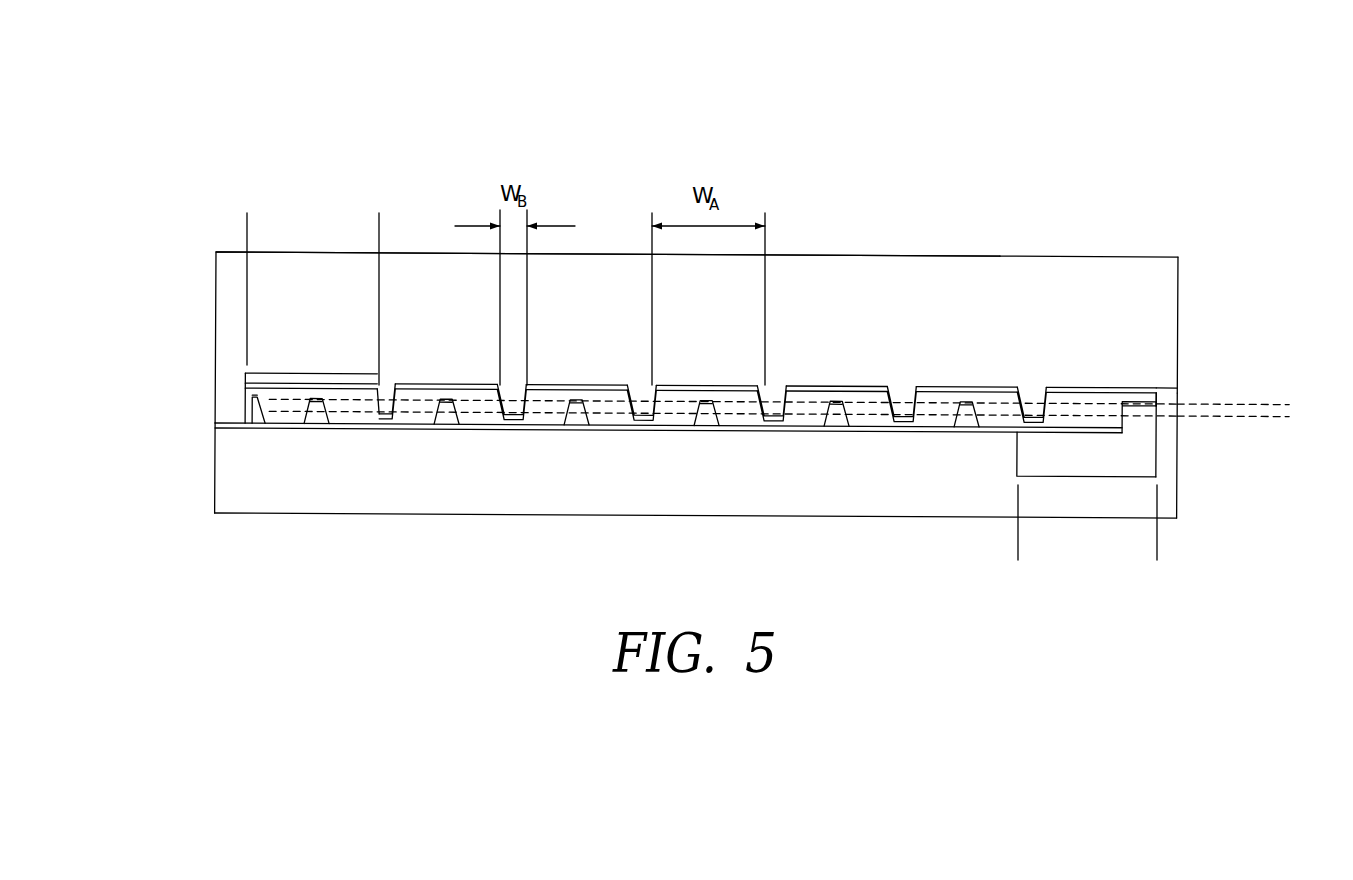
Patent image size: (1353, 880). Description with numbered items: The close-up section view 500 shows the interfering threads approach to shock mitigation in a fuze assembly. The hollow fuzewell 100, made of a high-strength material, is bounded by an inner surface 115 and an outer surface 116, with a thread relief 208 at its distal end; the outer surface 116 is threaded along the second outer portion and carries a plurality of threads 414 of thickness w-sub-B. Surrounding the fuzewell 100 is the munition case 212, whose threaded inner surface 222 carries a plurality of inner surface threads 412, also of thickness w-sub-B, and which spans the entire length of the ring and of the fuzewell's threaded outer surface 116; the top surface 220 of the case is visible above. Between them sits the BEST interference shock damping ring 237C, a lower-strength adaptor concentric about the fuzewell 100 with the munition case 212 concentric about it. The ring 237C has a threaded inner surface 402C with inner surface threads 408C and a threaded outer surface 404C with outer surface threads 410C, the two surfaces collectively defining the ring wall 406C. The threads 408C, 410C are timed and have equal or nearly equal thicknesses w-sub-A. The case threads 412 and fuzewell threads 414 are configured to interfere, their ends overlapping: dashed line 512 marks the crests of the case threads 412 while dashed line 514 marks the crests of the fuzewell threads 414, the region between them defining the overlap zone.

The fuzewell 100 is at (962, 529).
The inner surface 115 is at (268, 518).
The outer surface 116 is at (229, 422).
The thread relief 208 is at (379, 223).
The munition case 212 is at (1192, 294).
The top surface of second substrate 220 is at (831, 254).
The threaded inner surface 222 is at (1163, 398).
The BEST interference shock damping ring 237C is at (1133, 438).
The threaded inner surface 402C is at (253, 429).
The threaded outer surface 404C is at (270, 384).
The BEST shock damping ring wall 406C is at (1148, 386).
The inner surface threads 408C is at (550, 425).
The outer surface threads 410C is at (410, 396).
The inner surface threads 412 is at (897, 412).
The threads 414 is at (576, 402).
The close-up section view 500 is at (1020, 206).
The ends/crests 512 is at (1240, 420).
The ends/crests 514 is at (1276, 406).